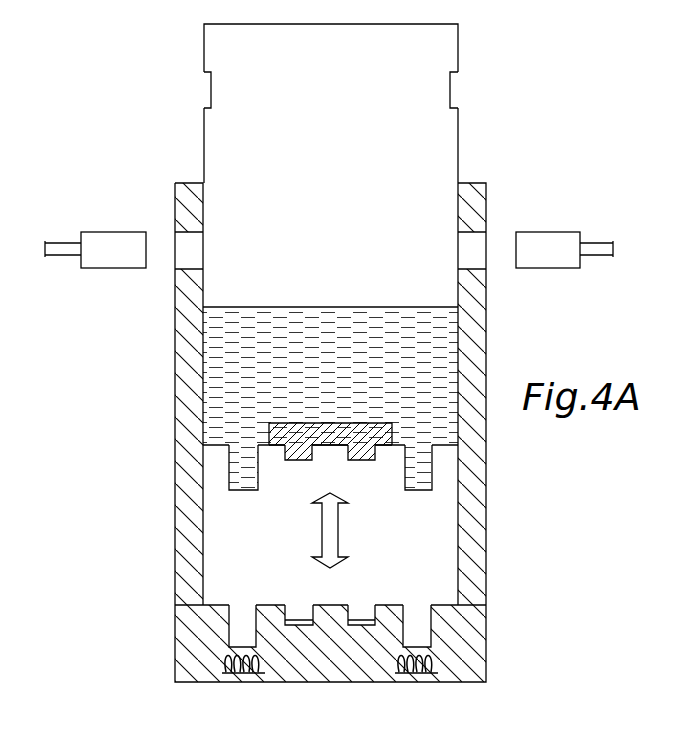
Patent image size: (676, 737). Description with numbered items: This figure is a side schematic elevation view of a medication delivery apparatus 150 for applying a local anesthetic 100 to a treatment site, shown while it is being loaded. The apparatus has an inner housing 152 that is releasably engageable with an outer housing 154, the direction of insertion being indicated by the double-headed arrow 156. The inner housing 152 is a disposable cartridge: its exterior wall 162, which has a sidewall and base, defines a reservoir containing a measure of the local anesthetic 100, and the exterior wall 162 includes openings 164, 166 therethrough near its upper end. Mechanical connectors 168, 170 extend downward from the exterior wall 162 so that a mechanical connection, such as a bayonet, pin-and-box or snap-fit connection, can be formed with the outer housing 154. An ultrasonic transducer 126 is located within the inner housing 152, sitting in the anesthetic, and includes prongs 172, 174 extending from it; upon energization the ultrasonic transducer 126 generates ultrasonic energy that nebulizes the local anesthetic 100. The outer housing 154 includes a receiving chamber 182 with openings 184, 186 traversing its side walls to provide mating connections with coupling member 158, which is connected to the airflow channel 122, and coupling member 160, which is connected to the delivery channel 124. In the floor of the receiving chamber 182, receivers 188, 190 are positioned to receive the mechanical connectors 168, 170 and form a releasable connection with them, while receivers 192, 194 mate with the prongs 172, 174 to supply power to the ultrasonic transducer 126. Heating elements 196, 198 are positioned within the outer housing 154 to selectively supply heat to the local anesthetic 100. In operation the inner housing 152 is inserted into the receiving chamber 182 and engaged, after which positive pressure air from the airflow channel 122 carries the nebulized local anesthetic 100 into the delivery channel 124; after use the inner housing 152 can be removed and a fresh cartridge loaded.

The local anesthetic 100 is at (348, 364).
The airflow channel 122 is at (60, 257).
The delivery channel 124 is at (602, 257).
The ultrasonic transducer 126 is at (300, 423).
The medication delivery apparatus 150 is at (393, 99).
The inner housing 152 is at (459, 137).
The outer housing 154 is at (488, 490).
The arrow 156 is at (327, 538).
The coupling member 158 is at (112, 268).
The coupling member 160 is at (548, 268).
The exterior wall 162 is at (203, 140).
The opening 164 is at (208, 73).
The opening 166 is at (452, 73).
The mechanical connector 168 is at (243, 490).
The mechanical connector 170 is at (418, 490).
The prong 172 is at (300, 460).
The prong 174 is at (360, 460).
The receiving chamber 182 is at (175, 657).
The opening 184 is at (177, 243).
The opening 186 is at (484, 243).
The receiver 188 is at (229, 627).
The receiver 190 is at (432, 627).
The receiver 192 is at (303, 628).
The receiver 194 is at (360, 628).
The heating element 196 is at (243, 673).
The heating element 198 is at (417, 673).